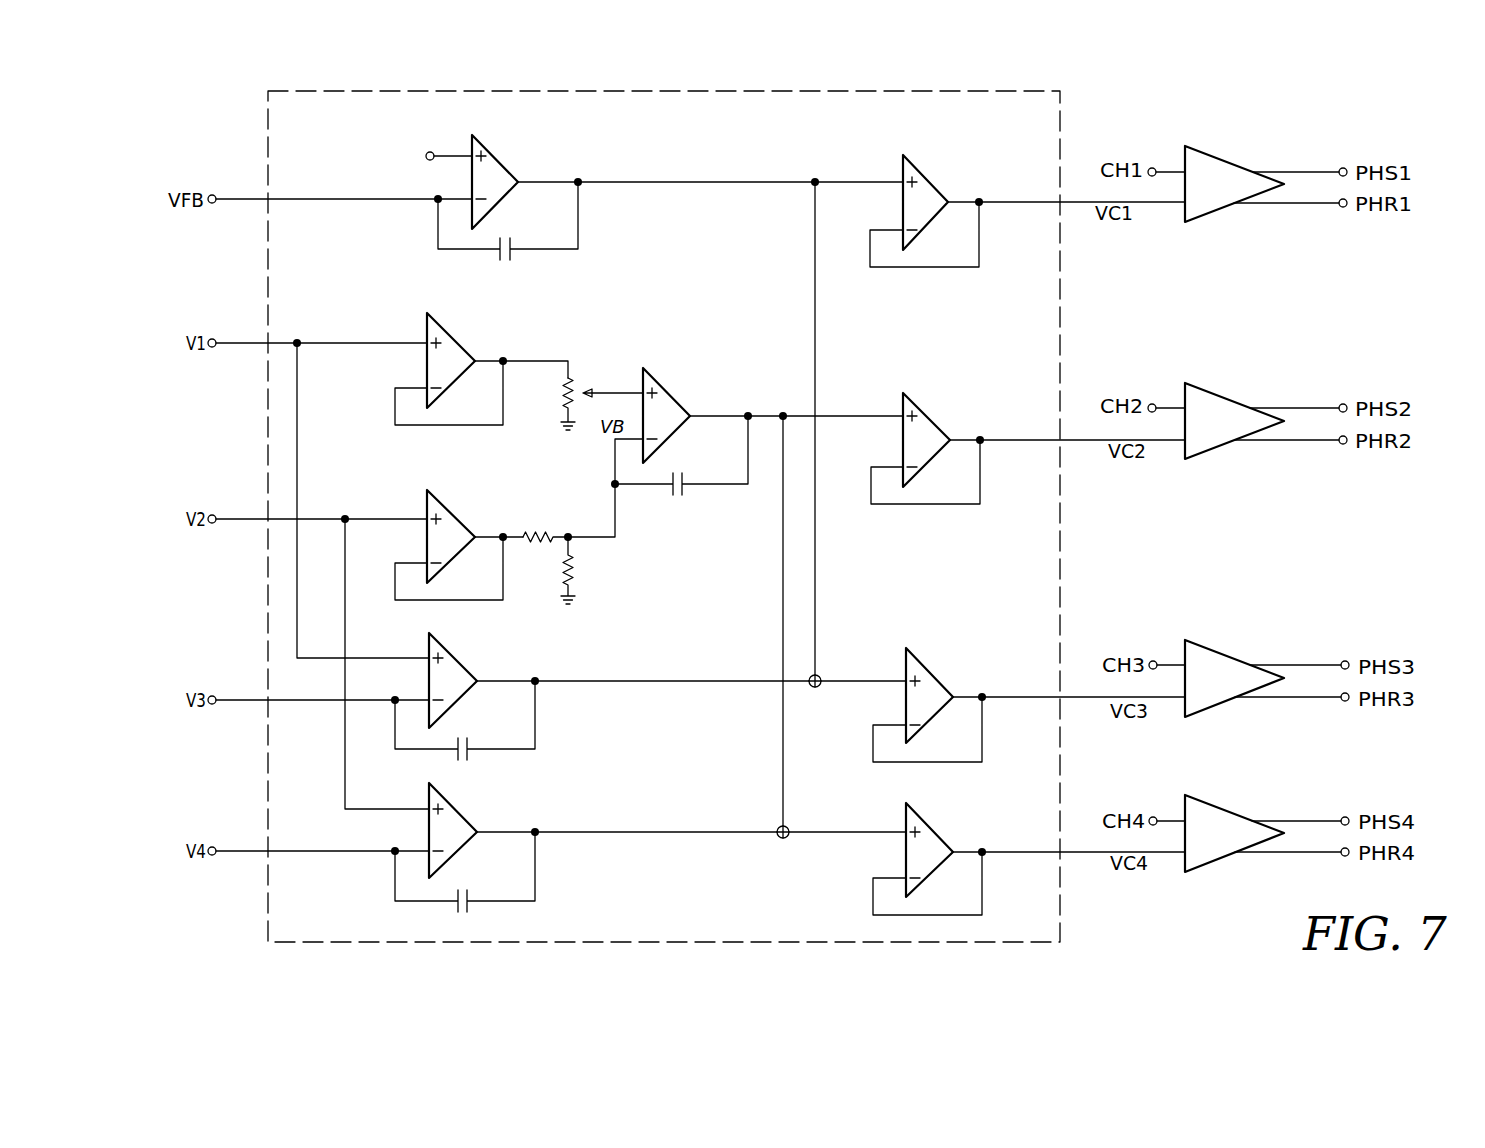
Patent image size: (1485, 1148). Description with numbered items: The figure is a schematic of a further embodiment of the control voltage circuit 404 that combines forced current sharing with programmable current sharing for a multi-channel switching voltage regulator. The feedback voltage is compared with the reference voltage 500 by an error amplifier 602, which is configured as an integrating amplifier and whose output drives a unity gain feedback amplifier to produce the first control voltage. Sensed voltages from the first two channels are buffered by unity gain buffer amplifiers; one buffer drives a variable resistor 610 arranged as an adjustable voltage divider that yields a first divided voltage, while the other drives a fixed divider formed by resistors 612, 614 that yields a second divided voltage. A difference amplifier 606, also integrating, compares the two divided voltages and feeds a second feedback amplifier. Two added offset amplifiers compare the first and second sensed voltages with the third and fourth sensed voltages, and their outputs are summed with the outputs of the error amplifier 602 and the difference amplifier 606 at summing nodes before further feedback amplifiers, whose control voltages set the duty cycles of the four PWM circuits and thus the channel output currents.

The control voltage circuit 404 is at (1059, 121).
The reference voltage 500 is at (407, 137).
The error amplifier 602 is at (500, 151).
The difference amplifier 606 is at (672, 392).
The variable resistor 610 is at (562, 388).
The resistor 612 is at (583, 570).
The resistor 614 is at (539, 552).